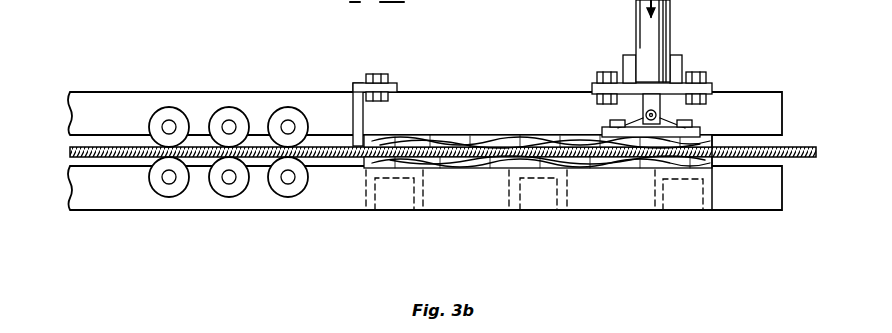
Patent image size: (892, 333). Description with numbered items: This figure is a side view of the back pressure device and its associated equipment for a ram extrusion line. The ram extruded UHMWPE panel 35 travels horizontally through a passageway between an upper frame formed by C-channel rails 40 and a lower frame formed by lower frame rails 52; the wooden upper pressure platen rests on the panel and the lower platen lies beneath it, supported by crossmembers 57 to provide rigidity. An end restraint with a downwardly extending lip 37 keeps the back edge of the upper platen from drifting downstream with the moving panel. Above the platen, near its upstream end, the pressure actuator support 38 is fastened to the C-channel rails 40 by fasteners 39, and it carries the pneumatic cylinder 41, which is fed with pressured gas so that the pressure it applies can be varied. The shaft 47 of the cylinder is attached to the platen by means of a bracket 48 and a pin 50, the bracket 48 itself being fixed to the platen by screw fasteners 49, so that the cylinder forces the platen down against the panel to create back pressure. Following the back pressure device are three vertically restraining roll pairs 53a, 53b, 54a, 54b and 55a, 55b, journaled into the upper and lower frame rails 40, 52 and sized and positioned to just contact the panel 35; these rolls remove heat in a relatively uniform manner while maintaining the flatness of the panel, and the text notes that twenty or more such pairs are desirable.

The ram extruded UHMWPE panel 35 is at (812, 147).
The downwardly extending lip 37 is at (352, 132).
The pressure actuator support 38 is at (626, 58).
The fasteners 39 is at (603, 70).
The C-channel rails 40 is at (97, 100).
The pneumatic cylinder 41 is at (670, 16).
The shaft 47 is at (660, 95).
The bracket 48 is at (640, 118).
The screw fasteners 49 is at (578, 162).
The pin 50 is at (664, 118).
The lower frame rails 52 is at (97, 198).
The vertically restraining roll 53a is at (288, 107).
The vertically restraining roll 53b is at (288, 197).
The vertically restraining roll 54a is at (228, 107).
The vertically restraining roll 54b is at (228, 197).
The vertically restraining roll 55a is at (168, 107).
The vertically restraining roll 55b is at (168, 197).
The crossmembers 57 is at (423, 196).